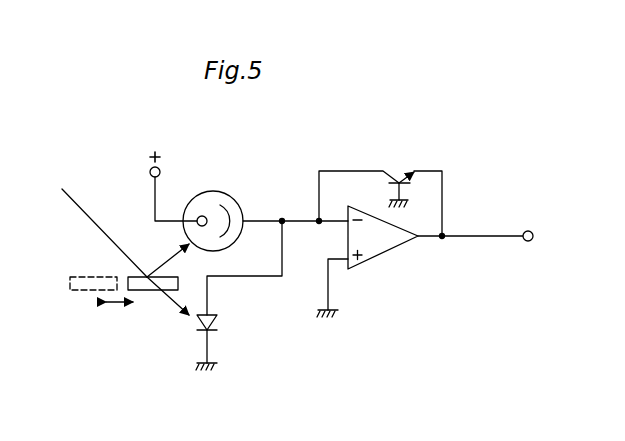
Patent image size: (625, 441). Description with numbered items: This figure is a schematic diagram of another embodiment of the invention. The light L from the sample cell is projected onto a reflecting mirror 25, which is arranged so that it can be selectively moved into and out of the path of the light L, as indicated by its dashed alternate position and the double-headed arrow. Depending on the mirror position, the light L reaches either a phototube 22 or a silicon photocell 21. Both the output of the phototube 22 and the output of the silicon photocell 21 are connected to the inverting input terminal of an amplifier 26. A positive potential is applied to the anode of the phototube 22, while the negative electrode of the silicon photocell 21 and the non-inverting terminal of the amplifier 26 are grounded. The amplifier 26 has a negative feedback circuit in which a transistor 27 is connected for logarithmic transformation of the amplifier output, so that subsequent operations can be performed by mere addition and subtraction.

The light L is at (77, 207).
The silicon photocell 21 is at (214, 326).
The phototube 22 is at (213, 191).
The reflecting mirror 25 is at (150, 285).
The amplifier 26 is at (389, 263).
The transistor 27 is at (400, 176).